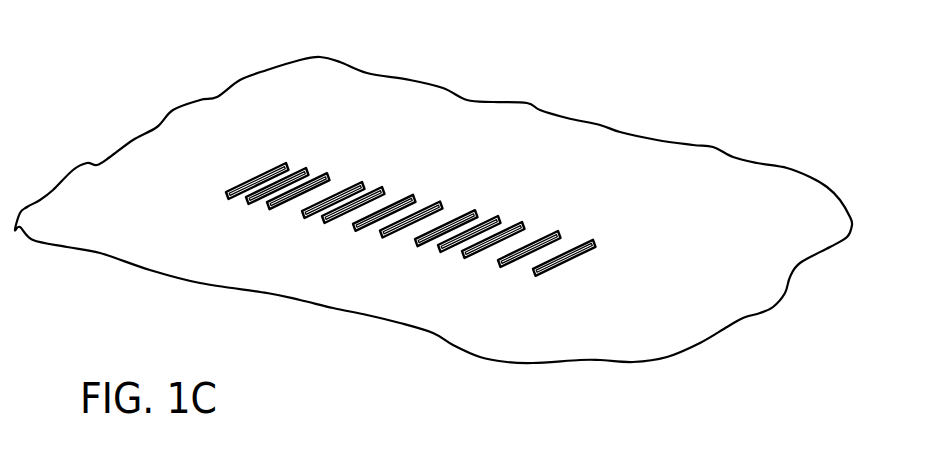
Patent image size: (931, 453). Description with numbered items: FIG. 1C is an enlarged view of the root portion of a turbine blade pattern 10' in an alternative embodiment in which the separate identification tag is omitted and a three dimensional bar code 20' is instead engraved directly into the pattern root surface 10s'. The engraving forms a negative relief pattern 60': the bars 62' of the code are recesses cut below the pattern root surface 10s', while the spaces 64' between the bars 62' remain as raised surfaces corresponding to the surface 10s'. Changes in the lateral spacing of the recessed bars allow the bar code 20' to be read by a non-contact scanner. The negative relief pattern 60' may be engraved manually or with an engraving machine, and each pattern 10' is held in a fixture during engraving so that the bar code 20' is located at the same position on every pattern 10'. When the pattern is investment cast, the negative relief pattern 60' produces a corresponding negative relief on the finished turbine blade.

The pattern 10' is at (433, 200).
The pattern root surface 10s' is at (433, 200).
The bar code 20' is at (370, 260).
The negative relief pattern 60' is at (607, 283).
The bars 62' is at (549, 325).
The spaces 64' is at (422, 305).